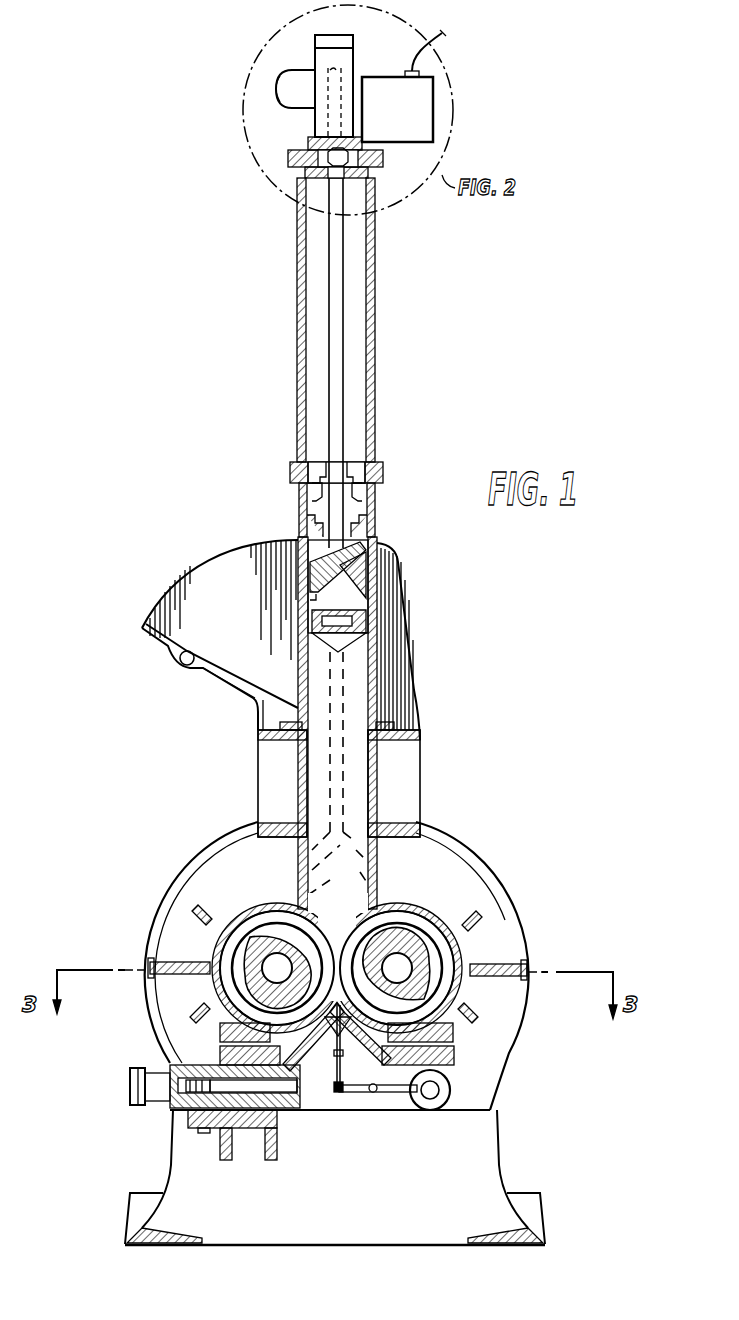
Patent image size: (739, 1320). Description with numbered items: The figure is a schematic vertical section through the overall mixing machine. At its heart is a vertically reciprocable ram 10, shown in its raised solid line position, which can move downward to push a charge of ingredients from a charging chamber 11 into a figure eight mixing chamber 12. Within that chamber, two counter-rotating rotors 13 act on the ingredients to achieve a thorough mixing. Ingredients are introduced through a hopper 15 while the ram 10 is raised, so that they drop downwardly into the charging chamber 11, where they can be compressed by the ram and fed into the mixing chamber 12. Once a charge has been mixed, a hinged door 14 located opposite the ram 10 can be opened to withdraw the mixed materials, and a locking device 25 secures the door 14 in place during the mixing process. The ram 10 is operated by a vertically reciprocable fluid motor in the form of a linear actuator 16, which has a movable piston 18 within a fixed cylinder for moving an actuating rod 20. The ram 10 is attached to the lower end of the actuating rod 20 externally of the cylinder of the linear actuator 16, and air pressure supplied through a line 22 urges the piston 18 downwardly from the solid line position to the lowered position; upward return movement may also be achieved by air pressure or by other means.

The ram 10 is at (354, 646).
The charging chamber 11 is at (362, 777).
The figure eight mixing chamber 12 is at (349, 987).
The counter-rotating rotors 13 is at (228, 976).
The hinged door 14 is at (352, 1062).
The hopper 15 is at (208, 594).
The linear actuator 16 is at (297, 292).
The piston 18 is at (352, 215).
The actuating rod 20 is at (350, 350).
The line 22 is at (302, 66).
The locking device 25 is at (134, 1107).